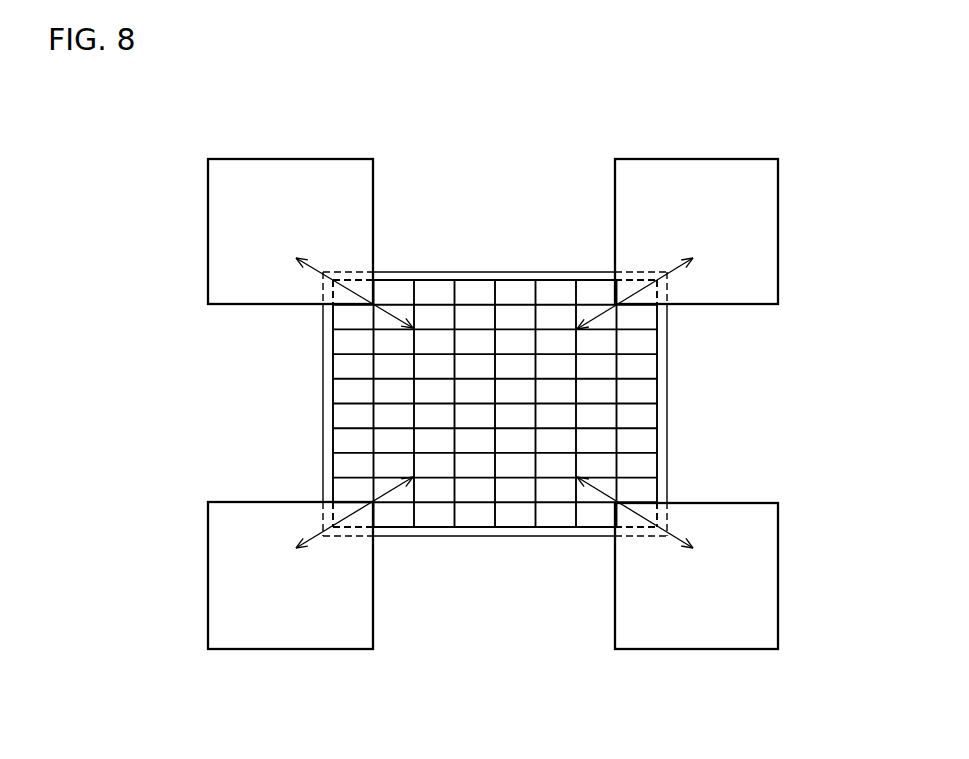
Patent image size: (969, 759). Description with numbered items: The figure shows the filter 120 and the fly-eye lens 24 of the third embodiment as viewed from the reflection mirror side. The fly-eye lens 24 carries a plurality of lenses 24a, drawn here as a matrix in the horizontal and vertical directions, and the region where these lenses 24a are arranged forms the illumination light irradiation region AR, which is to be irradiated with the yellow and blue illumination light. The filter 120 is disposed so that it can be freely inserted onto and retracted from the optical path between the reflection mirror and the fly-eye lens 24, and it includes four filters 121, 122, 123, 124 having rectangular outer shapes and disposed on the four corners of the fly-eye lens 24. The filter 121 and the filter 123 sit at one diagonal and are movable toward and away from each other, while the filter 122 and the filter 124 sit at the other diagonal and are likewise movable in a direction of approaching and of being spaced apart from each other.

The filter 120 is at (497, 405).
The filter 121 is at (257, 158).
The filter 122 is at (693, 158).
The filter 123 is at (703, 650).
The filter 124 is at (292, 650).
The fly-eye lens 24 is at (495, 370).
The lenses 24a is at (372, 267).
The illumination light irradiation region AR is at (477, 534).